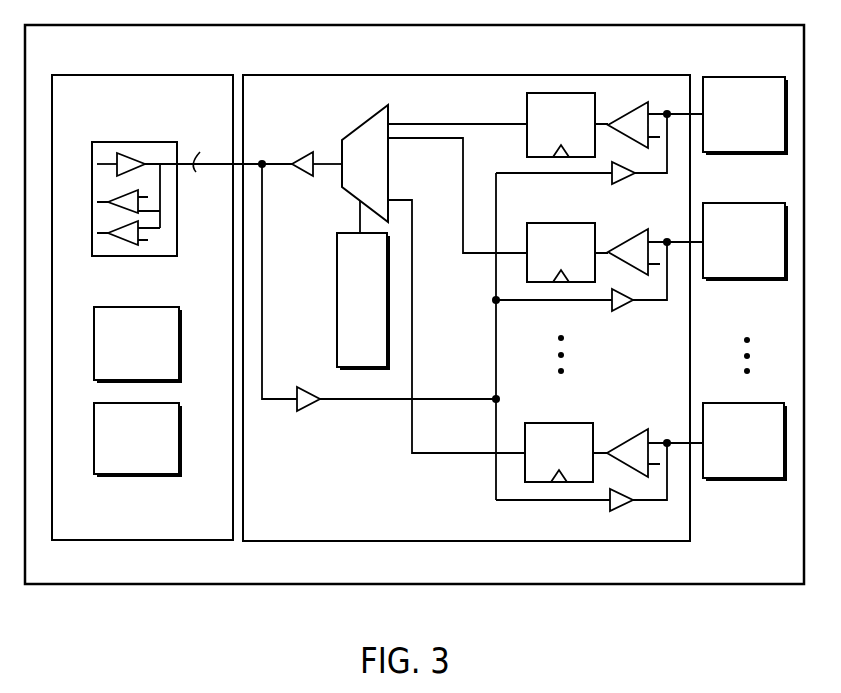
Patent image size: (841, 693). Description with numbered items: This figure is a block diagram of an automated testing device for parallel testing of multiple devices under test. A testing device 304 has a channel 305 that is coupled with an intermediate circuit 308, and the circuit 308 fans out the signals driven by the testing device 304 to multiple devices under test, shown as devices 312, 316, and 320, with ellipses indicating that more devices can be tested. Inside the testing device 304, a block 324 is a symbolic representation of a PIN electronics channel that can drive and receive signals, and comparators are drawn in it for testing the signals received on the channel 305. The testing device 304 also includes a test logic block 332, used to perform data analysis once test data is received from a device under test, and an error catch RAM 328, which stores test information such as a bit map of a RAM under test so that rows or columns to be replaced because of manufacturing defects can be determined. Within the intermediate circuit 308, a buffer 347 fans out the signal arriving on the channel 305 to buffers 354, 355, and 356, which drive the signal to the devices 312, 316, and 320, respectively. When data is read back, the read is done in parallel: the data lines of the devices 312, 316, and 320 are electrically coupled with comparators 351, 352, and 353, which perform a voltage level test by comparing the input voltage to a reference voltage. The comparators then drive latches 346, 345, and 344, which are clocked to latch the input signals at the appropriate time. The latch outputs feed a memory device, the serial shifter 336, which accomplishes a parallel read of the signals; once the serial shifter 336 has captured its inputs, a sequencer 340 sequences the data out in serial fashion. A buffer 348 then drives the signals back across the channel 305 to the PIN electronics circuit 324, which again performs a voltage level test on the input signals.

The testing device 304 is at (135, 75).
The intermediate circuit 308 is at (318, 74).
The channel 305 is at (218, 146).
The PIN electronics channel 324 is at (133, 142).
The error catch RAM 328 is at (127, 307).
The test logic block 332 is at (128, 477).
The serial shifter 336 is at (377, 114).
The sequencer 340 is at (338, 295).
The latch 344 is at (570, 423).
The latch 345 is at (552, 223).
The latch 346 is at (540, 93).
The buffer 347 is at (312, 405).
The buffer 348 is at (301, 177).
The comparator 351 is at (626, 107).
The comparator 352 is at (626, 240).
The comparator 353 is at (628, 431).
The buffer 354 is at (622, 178).
The buffer 355 is at (620, 308).
The buffer 356 is at (618, 510).
The device under test 312 is at (735, 152).
The device under test 316 is at (735, 278).
The device under test 320 is at (735, 478).